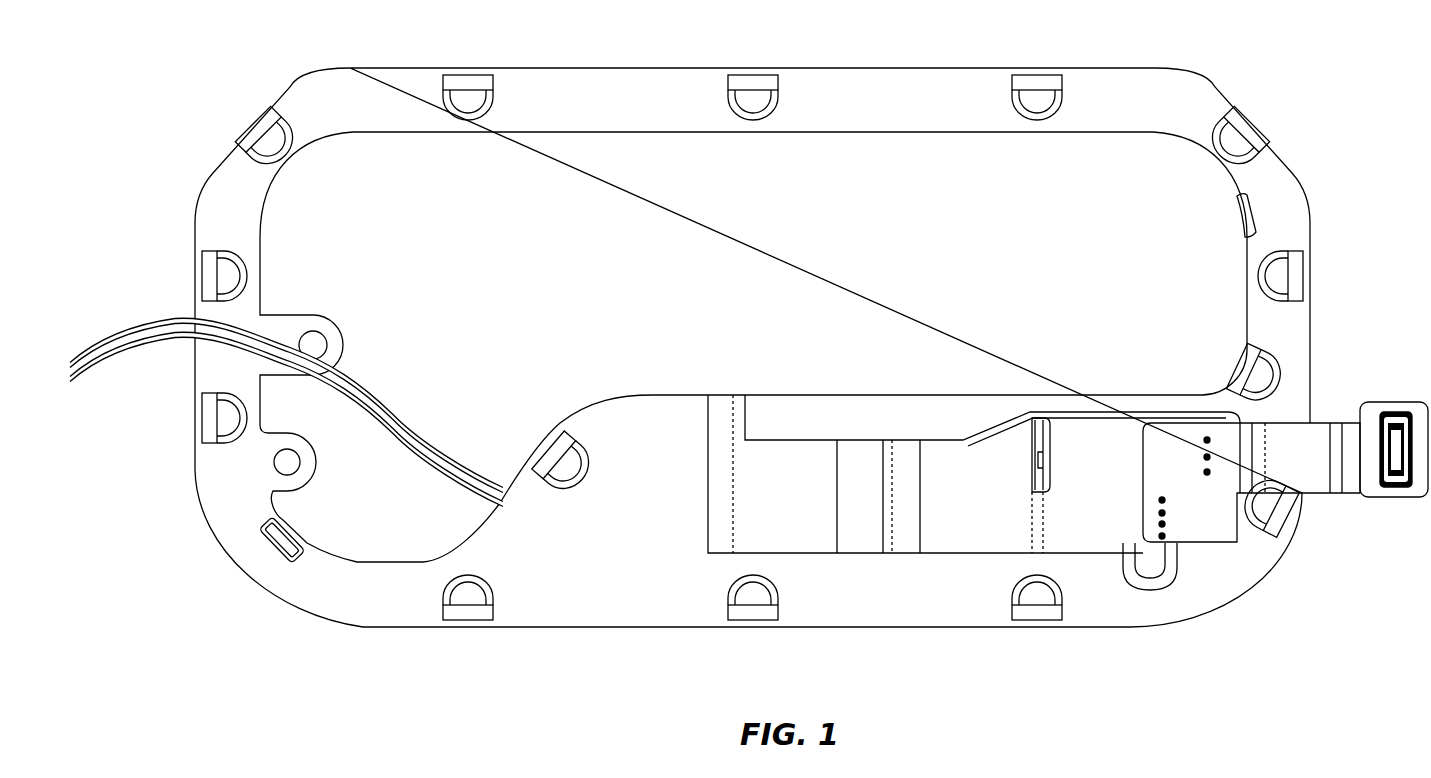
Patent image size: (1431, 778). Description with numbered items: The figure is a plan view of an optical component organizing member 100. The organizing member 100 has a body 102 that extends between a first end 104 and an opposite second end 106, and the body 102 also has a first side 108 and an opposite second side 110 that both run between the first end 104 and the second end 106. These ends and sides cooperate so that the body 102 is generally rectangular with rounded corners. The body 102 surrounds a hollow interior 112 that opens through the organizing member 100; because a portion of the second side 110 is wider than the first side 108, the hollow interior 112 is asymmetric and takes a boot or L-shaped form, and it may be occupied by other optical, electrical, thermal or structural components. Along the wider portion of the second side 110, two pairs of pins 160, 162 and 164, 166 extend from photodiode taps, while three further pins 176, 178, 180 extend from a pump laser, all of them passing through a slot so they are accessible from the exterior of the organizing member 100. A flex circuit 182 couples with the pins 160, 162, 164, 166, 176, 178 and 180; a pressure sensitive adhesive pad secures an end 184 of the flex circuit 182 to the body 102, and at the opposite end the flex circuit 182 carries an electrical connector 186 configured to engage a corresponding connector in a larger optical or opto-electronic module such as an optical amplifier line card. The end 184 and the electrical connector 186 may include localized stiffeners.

The optical component organizing member 100 is at (204, 70).
The body 102 is at (758, 70).
The first end 104 is at (195, 278).
The second end 106 is at (1312, 345).
The first side 108 is at (607, 68).
The second side 110 is at (948, 628).
The hollow interior 112 is at (876, 200).
The pin 160 is at (1162, 536).
The pin 162 is at (1162, 524).
The pin 164 is at (1162, 513).
The pin 166 is at (1162, 500).
The pin 176 is at (1207, 440).
The pin 178 is at (1207, 457).
The pin 180 is at (1207, 472).
The flex circuit 182 is at (1345, 497).
The end of the flex circuit 184 is at (1125, 535).
The electrical connector 186 is at (1396, 402).